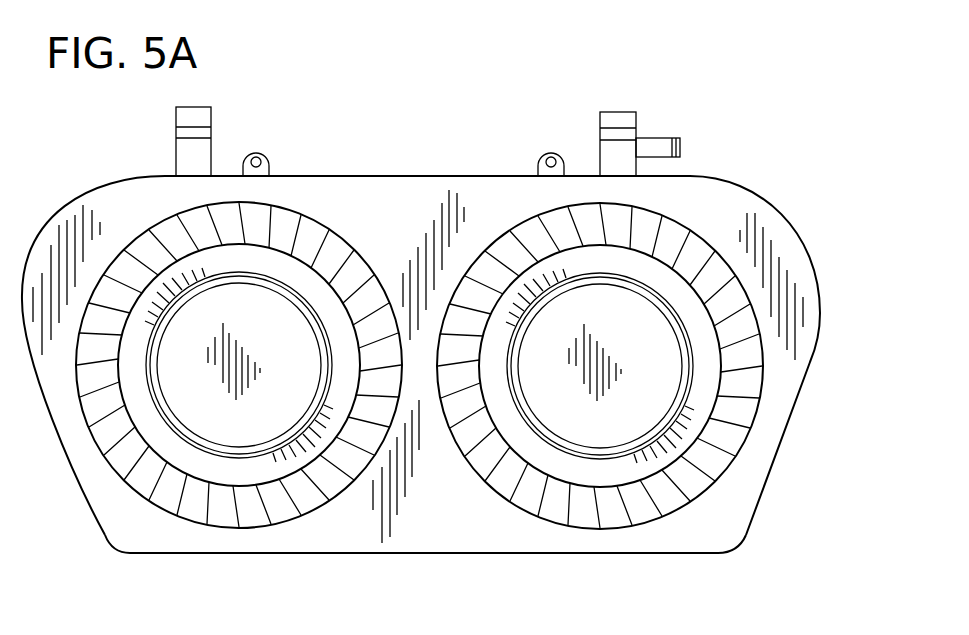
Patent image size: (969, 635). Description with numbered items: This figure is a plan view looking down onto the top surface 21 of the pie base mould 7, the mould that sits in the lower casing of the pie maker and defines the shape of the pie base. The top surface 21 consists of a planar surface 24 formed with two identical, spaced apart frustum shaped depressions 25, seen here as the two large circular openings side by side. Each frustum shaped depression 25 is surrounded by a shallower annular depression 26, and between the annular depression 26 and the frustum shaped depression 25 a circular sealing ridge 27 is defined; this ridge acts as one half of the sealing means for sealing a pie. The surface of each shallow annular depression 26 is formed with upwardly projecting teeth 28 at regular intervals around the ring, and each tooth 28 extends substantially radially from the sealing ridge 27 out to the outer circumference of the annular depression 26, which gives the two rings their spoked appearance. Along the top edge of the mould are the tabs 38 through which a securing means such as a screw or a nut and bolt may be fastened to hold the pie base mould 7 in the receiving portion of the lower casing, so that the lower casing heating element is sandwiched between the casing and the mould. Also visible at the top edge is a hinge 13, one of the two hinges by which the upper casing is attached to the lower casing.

The pie base mould 7 is at (822, 322).
The hinge 13 is at (195, 118).
The top surface 21 is at (698, 530).
The planar surface 24 is at (468, 533).
The frustum shaped depression 25 is at (693, 402).
The annular depression 26 is at (717, 455).
The circular sealing ridge 27 is at (712, 298).
The tooth 28 is at (688, 242).
The tab 38 is at (255, 152).